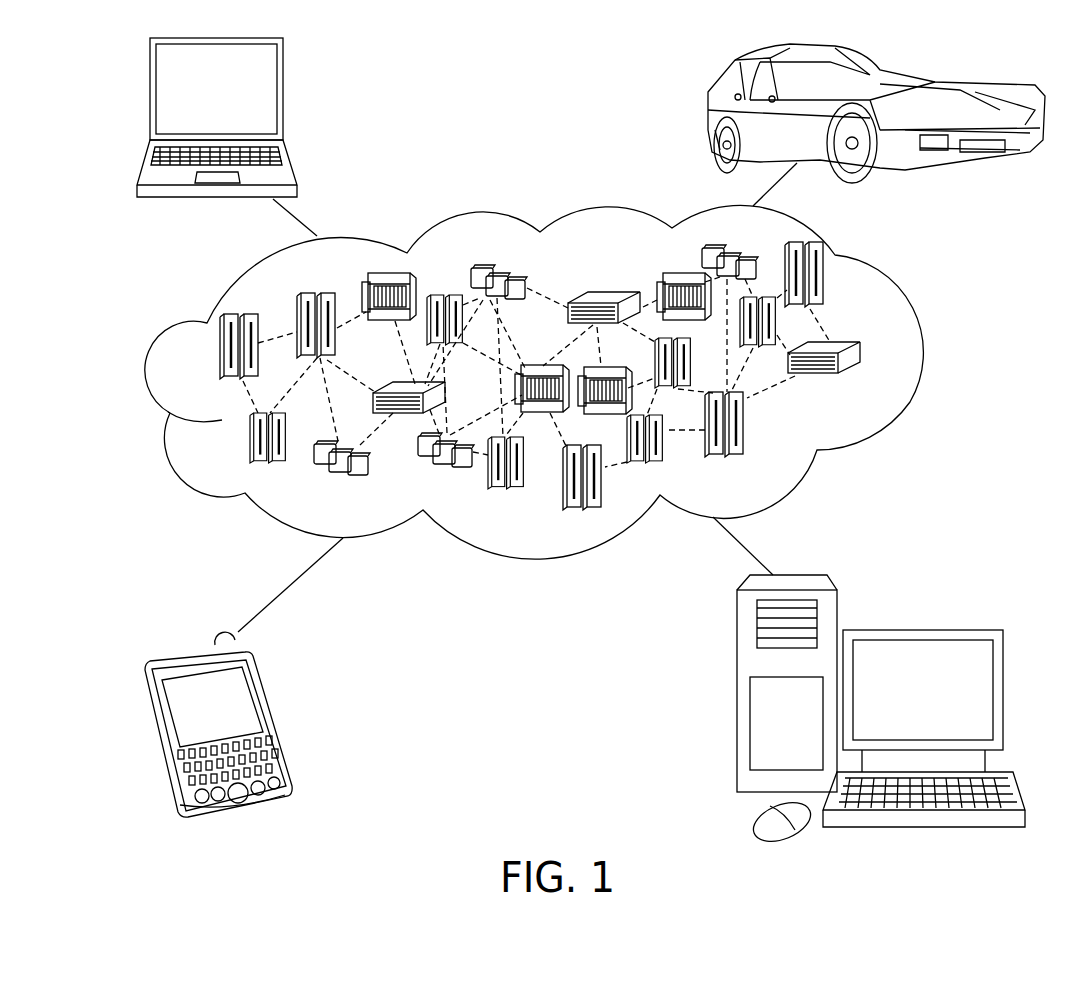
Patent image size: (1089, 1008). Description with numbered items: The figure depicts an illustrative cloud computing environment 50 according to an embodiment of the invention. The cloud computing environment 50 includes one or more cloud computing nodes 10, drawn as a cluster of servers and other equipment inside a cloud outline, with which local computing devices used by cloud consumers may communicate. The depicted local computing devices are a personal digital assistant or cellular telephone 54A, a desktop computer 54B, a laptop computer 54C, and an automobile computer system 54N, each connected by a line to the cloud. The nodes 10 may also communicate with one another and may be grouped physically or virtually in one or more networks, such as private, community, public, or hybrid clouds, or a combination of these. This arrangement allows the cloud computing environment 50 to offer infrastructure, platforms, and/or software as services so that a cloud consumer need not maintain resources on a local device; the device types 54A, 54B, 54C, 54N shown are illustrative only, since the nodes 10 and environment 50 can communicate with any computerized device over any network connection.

The cloud computing node 10 is at (864, 384).
The cloud computing environment 50 is at (922, 356).
The personal digital assistant or cellular telephone 54A is at (274, 718).
The desktop computer 54B is at (920, 630).
The laptop computer 54C is at (283, 97).
The automobile computer system 54N is at (707, 117).